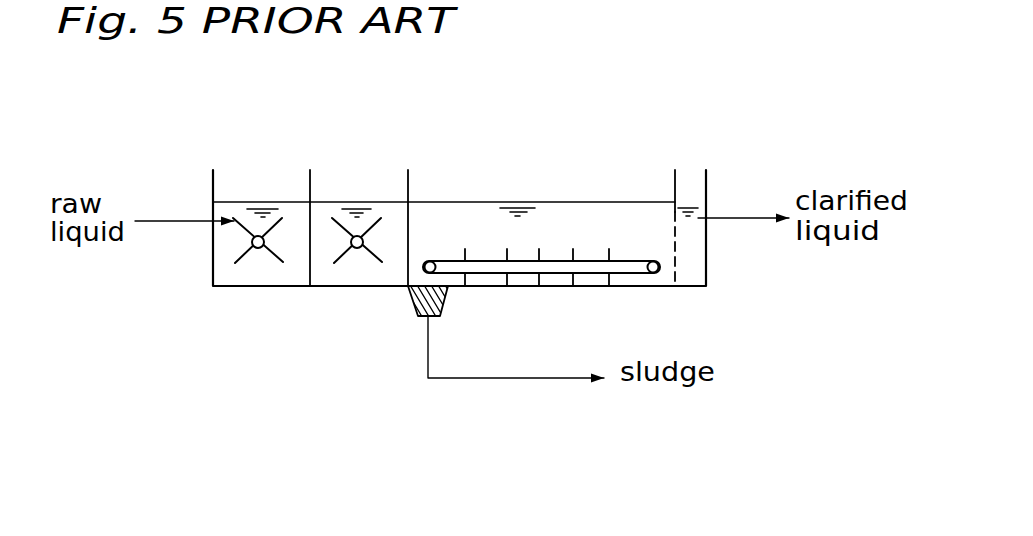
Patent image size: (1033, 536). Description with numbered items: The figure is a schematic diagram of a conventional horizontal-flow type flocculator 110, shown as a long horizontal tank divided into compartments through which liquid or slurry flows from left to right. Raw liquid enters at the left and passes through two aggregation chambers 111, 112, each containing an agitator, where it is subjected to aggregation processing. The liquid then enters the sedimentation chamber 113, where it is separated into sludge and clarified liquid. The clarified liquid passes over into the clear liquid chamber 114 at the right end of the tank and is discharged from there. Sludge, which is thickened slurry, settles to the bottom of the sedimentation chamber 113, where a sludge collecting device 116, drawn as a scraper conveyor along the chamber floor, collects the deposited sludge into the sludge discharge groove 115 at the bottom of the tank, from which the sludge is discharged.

The horizontal-flow type flocculator 110 is at (207, 173).
The aggregation chamber 111 is at (243, 195).
The aggregation chamber 112 is at (336, 197).
The sedimentation chamber 113 is at (529, 197).
The clear liquid chamber 114 is at (692, 193).
The sludge discharge groove 115 is at (416, 318).
The sludge collecting device 116 is at (625, 257).